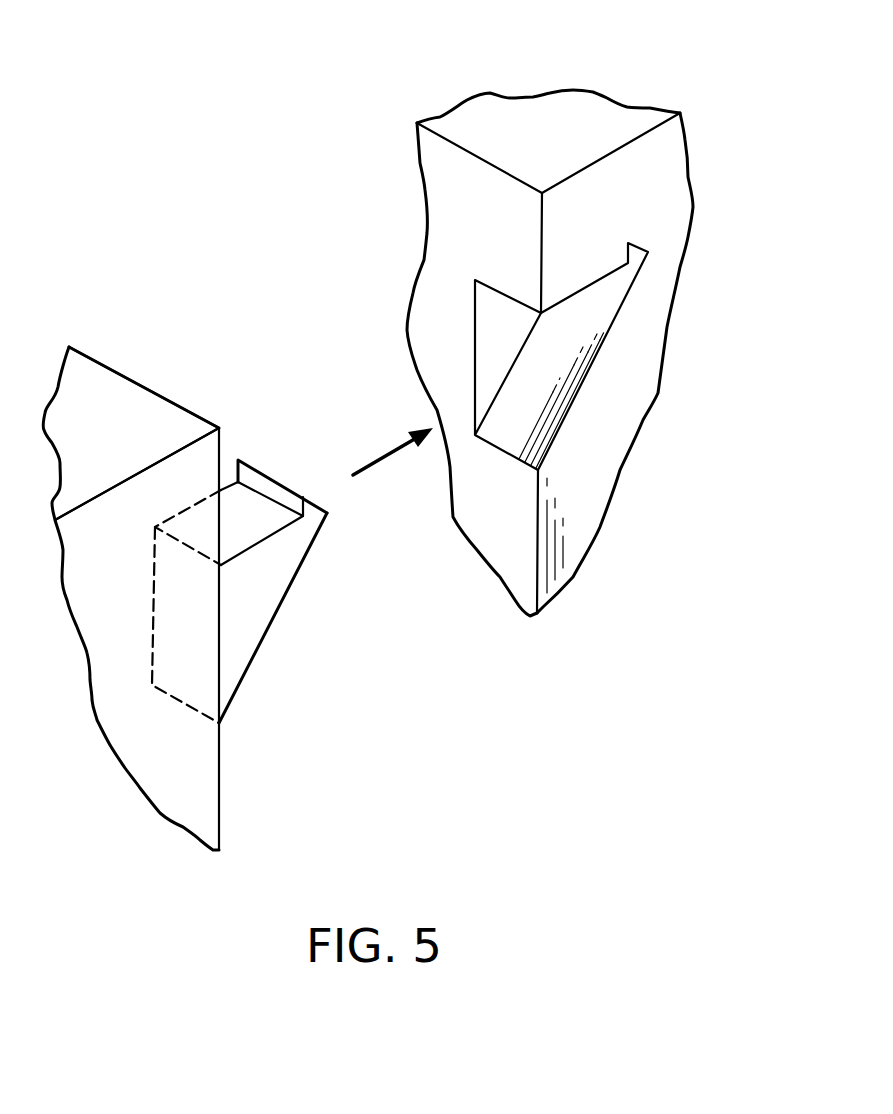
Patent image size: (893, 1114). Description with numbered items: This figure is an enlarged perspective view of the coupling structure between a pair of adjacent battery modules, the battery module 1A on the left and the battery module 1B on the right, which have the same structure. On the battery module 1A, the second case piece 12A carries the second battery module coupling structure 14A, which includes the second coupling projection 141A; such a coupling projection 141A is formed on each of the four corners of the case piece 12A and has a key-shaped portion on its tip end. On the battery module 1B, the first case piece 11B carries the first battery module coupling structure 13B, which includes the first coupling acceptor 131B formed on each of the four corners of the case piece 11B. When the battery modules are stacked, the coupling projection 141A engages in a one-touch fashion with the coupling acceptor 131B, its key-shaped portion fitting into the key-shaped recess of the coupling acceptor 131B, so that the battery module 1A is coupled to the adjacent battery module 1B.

The battery module 1A is at (221, 514).
The second case piece 12A is at (137, 380).
The second battery module coupling structure 14A is at (277, 429).
The second coupling projection 141A is at (278, 572).
The battery module 1B is at (605, 308).
The first case piece 11B is at (643, 133).
The first battery module coupling structure 13B is at (639, 402).
The first coupling acceptor 131B is at (577, 320).